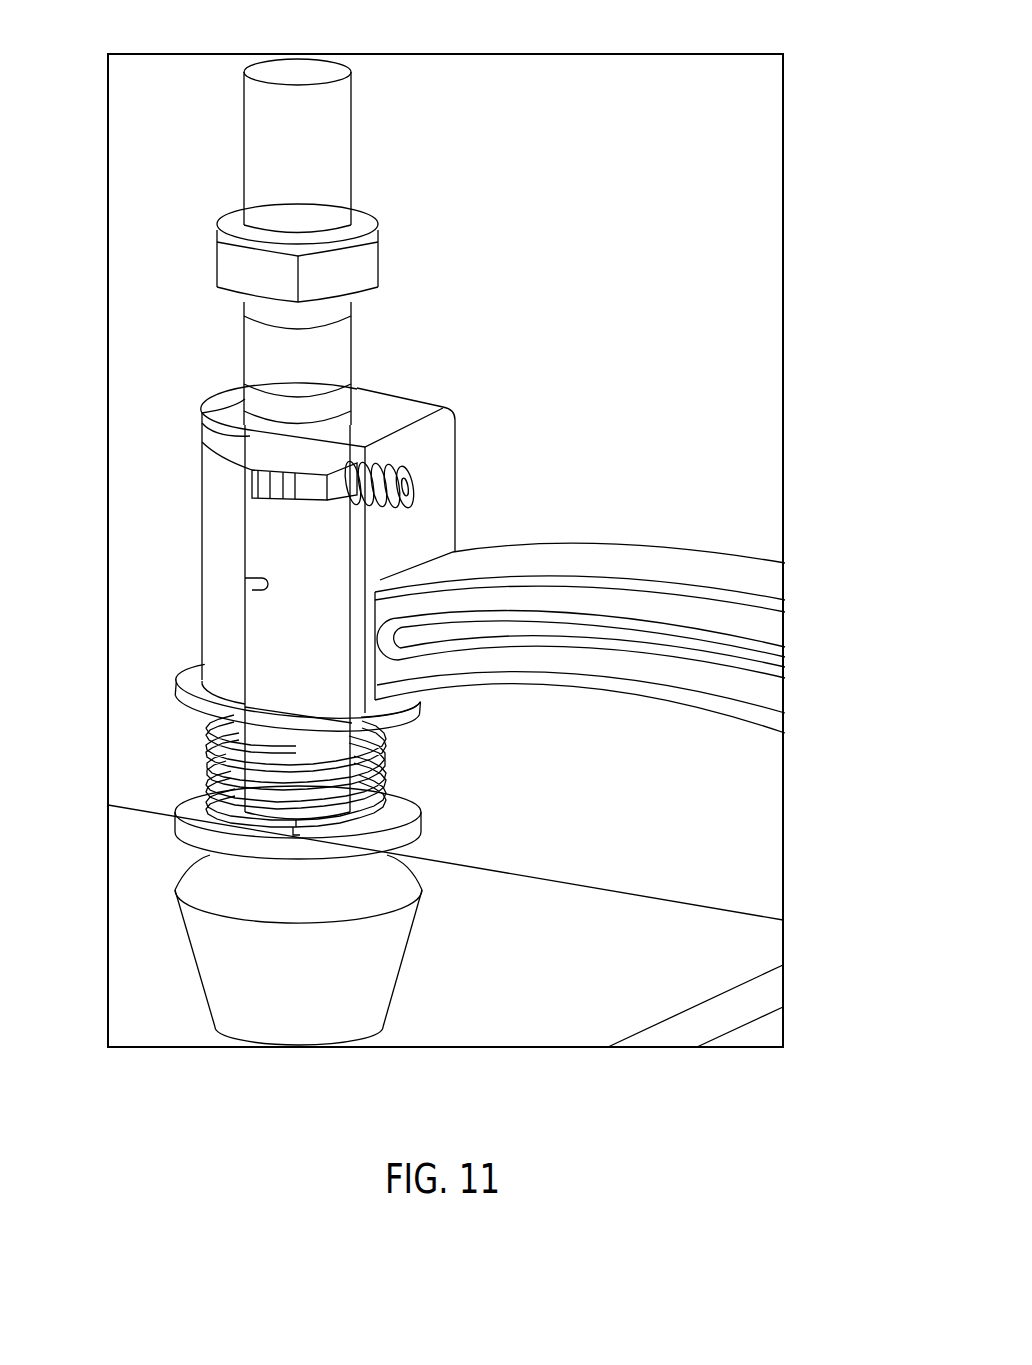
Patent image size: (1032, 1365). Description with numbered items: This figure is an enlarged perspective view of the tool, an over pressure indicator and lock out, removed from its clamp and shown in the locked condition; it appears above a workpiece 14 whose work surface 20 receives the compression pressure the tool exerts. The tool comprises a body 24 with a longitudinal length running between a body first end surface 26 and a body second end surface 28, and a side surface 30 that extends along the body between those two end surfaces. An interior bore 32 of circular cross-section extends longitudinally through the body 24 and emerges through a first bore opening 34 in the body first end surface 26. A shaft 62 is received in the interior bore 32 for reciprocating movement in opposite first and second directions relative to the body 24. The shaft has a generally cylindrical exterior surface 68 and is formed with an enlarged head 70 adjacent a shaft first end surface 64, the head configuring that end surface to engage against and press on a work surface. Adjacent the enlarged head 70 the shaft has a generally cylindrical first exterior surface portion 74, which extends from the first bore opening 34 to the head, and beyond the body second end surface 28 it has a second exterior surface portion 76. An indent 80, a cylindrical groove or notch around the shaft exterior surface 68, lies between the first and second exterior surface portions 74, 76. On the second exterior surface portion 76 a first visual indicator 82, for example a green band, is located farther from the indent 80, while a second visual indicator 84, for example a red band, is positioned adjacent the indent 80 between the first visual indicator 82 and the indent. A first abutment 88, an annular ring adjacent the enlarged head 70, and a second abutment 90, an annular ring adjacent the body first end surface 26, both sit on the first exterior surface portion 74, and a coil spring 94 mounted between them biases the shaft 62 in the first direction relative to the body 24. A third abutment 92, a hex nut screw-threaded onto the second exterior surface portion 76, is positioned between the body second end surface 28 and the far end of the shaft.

The workpiece 14 is at (772, 990).
The work surface 20 is at (753, 958).
The body 24 is at (413, 698).
The body first end surface 26 is at (205, 700).
The body second end surface 28 is at (233, 403).
The side surface 30 is at (210, 632).
The interior bore 32 is at (247, 582).
The first bore opening 34 is at (238, 723).
The shaft 62 is at (262, 543).
The shaft first end surface 64 is at (233, 1045).
The shaft exterior surface 68 is at (272, 150).
The enlarged head 70 is at (213, 957).
The first exterior surface portion 74 is at (335, 575).
The second exterior surface portion 76 is at (332, 314).
The indent 80 is at (253, 476).
The first visual indicator 82 is at (335, 360).
The second visual indicator 84 is at (333, 407).
The first abutment 88 is at (212, 840).
The second abutment 90 is at (193, 690).
The third abutment 92 is at (362, 222).
The spring 94 is at (390, 852).